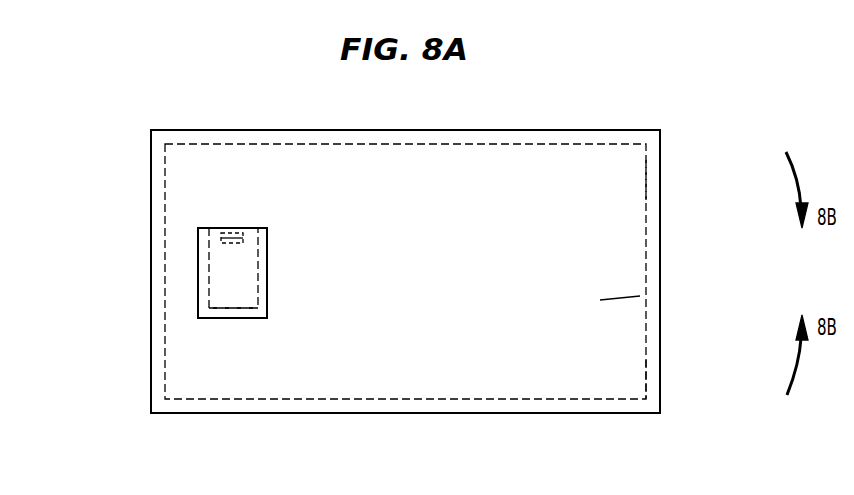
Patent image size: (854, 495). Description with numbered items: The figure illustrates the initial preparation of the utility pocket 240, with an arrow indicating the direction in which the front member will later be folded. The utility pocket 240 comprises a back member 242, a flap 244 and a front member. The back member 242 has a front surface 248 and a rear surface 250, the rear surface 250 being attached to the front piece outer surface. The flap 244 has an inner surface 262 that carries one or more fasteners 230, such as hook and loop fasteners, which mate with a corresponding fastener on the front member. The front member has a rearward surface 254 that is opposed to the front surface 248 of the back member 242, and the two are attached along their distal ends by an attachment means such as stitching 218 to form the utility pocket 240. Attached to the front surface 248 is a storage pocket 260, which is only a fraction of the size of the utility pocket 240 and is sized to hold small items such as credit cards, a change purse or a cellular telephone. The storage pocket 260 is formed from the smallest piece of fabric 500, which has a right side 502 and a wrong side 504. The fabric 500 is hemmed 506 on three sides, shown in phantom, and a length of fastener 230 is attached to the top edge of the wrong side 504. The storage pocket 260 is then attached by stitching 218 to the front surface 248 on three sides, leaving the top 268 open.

The utility pocket 240 is at (122, 118).
The inner surface 262 is at (165, 182).
The piece of fabric 500 is at (238, 265).
The storage pocket 260 is at (220, 276).
The right side 502 is at (210, 245).
The wrong side 504 is at (210, 227).
The stitching 218 is at (207, 309).
The hem 506 is at (230, 308).
The fastener 230 is at (227, 240).
The top 268 is at (251, 228).
The flap 244 is at (625, 181).
The back member 242 is at (615, 270).
The front surface 248 is at (548, 294).
The rear surface 250 is at (662, 332).
The rearward surface 254 is at (605, 382).